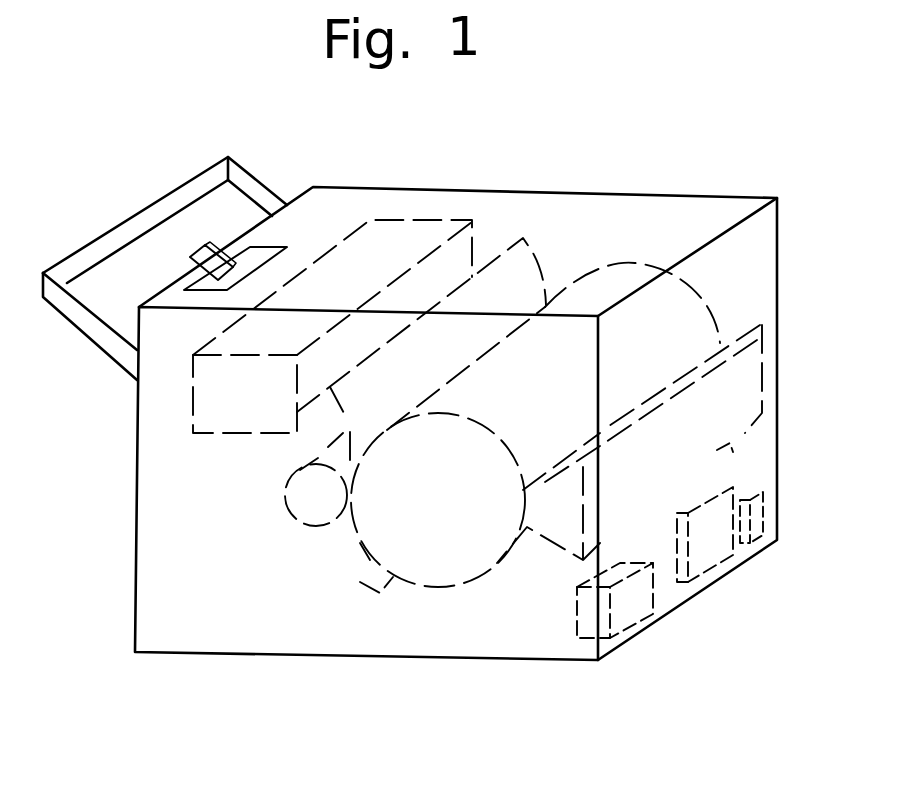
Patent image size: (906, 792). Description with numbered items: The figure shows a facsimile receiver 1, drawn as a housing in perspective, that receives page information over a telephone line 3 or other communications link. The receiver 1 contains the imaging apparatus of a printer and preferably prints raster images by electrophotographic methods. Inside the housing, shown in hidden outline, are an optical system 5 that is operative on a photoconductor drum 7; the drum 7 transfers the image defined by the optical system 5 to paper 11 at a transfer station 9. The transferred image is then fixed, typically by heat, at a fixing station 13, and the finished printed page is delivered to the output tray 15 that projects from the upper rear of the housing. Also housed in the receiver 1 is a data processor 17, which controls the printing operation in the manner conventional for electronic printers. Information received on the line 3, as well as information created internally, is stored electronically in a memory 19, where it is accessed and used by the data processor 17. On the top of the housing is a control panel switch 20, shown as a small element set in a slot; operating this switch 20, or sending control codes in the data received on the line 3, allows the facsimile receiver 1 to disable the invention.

The facsimile receiver 1 is at (142, 677).
The telephone line 3 is at (755, 524).
The optical system 5 is at (737, 477).
The photoconductor drum 7 is at (465, 587).
The transfer station 9 is at (278, 513).
The paper 11 is at (375, 583).
The fixing station 13 is at (186, 406).
The output tray 15 is at (43, 300).
The data processor 17 is at (703, 616).
The memory 19 is at (776, 557).
The control panel switch 20 is at (217, 257).